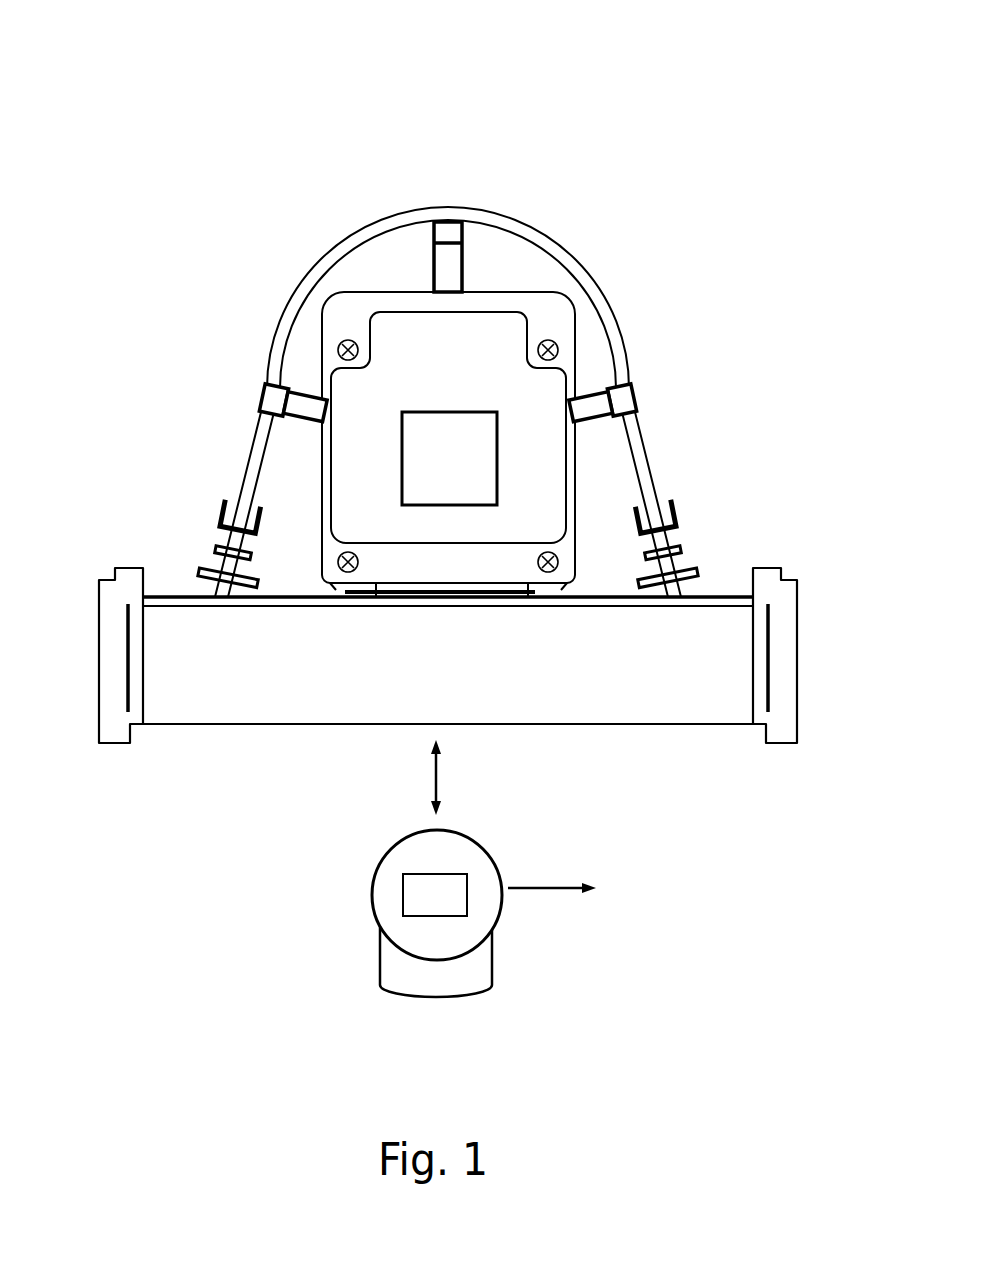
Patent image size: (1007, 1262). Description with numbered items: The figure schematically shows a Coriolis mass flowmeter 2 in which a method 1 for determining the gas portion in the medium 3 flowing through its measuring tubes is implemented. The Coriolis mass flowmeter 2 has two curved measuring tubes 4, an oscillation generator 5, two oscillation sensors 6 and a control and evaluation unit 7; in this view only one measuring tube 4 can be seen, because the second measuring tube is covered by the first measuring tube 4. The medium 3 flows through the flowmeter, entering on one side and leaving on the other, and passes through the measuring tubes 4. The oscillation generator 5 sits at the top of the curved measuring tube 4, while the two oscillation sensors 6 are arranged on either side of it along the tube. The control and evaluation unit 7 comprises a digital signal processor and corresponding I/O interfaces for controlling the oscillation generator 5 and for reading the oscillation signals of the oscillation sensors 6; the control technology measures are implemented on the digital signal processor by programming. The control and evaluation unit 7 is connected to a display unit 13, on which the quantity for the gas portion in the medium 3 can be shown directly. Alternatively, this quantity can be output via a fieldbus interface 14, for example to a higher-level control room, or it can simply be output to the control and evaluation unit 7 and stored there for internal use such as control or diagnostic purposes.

The method for determining the gas portion 1 is at (436, 482).
The Coriolis mass flowmeter 2 is at (150, 82).
The medium 3 is at (0, 658).
The measuring tube 4 is at (357, 247).
The oscillation generator 5 is at (455, 222).
The oscillation sensors 6 is at (268, 403).
The control and evaluation unit 7 is at (465, 368).
The display unit 13 is at (390, 975).
The fieldbus interface 14 is at (552, 866).